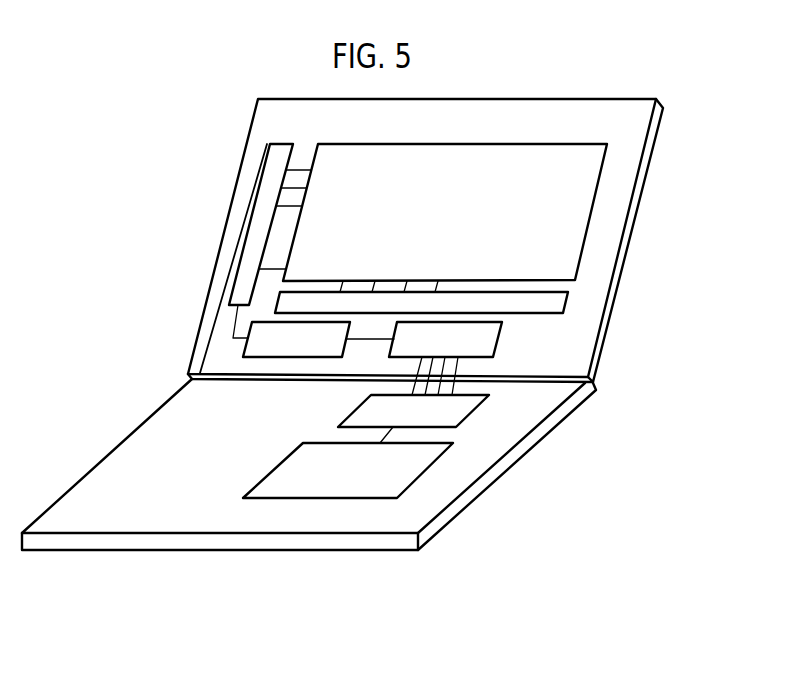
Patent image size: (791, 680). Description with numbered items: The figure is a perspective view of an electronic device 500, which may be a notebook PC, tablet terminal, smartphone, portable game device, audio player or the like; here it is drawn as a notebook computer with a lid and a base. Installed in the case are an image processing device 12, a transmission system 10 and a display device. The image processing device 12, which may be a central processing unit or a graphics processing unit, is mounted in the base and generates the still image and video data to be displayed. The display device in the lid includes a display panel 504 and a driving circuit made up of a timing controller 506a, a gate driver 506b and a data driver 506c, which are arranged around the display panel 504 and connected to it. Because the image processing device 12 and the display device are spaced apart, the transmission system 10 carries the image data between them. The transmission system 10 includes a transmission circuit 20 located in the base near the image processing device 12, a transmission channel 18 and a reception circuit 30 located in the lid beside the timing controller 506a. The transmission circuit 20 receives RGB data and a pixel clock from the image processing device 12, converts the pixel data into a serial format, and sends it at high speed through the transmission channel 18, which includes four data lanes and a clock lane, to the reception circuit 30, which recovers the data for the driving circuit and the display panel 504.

The electronic device 500 is at (376, 381).
The display panel 504 is at (558, 218).
The timing controller 506a is at (270, 343).
The gate driver 506b is at (262, 228).
The data driver 506c is at (553, 302).
The transmission system 10 is at (534, 382).
The reception circuit 30 is at (483, 338).
The transmission channel 18 is at (458, 367).
The transmission circuit 20 is at (442, 410).
The image processing device 12 is at (345, 475).